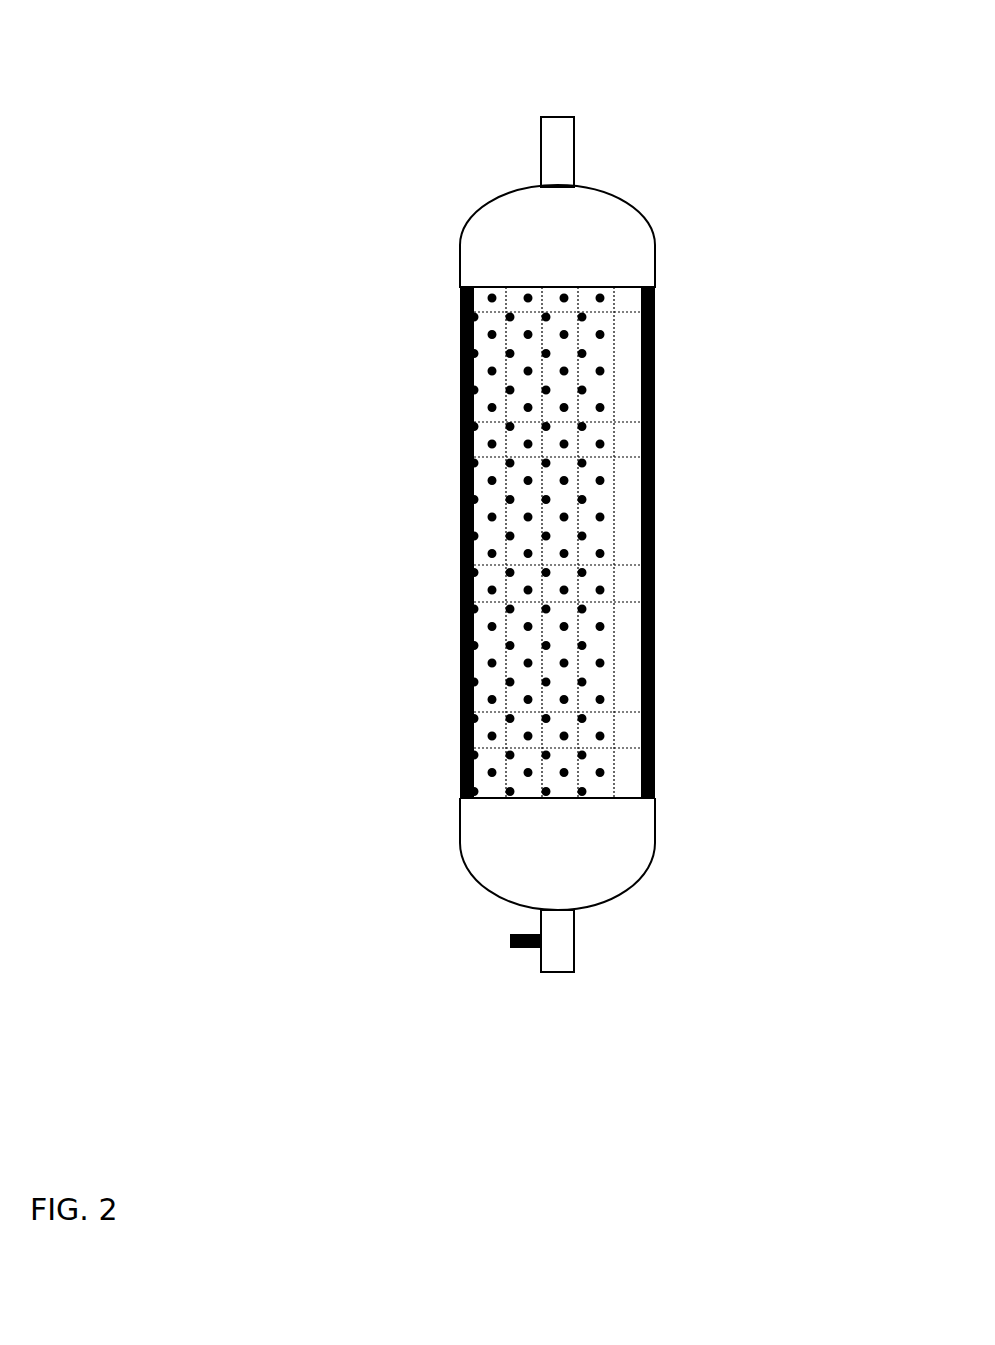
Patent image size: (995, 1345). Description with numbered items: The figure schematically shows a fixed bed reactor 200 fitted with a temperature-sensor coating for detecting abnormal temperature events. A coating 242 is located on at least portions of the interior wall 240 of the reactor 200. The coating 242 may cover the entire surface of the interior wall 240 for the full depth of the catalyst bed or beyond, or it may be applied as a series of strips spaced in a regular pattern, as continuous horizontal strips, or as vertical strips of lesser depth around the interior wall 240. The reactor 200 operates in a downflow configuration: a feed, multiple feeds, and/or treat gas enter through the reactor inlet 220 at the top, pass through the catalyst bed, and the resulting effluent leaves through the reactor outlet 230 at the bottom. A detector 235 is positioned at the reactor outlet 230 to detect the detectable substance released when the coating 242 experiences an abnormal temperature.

The reactor 200 is at (712, 548).
The reactor inlet 220 is at (553, 115).
The reactor outlet 230 is at (553, 972).
The detector 235 is at (507, 937).
The interior wall 240 is at (634, 240).
The coating 242 is at (458, 327).